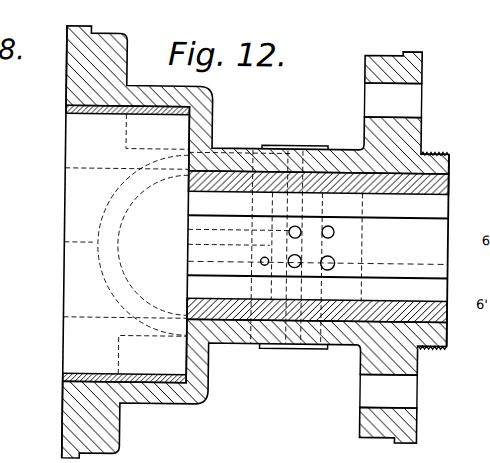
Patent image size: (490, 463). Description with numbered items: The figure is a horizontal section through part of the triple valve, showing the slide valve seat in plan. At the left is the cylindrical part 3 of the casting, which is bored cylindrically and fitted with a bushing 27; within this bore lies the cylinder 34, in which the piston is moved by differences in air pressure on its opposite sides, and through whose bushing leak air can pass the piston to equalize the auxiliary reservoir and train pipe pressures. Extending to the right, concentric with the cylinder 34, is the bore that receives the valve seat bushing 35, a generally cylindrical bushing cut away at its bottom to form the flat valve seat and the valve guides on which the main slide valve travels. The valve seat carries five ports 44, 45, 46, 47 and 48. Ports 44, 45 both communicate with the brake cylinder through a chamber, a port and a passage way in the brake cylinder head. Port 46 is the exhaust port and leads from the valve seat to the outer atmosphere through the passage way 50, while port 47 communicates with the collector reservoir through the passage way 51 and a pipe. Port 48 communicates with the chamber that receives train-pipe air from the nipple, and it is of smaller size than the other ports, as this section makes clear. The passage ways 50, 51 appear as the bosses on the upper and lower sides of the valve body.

The cylindrical part 3 is at (172, 405).
The bushing 27 is at (93, 116).
The cylinder 34 is at (80, 351).
The valve seat bushing 35 is at (442, 183).
The port 44 is at (335, 263).
The port 45 is at (334, 232).
The exhaust port 46 is at (299, 236).
The port 47 is at (301, 259).
The port 48 is at (260, 261).
The passage way 50 is at (316, 145).
The passage way 51 is at (292, 348).